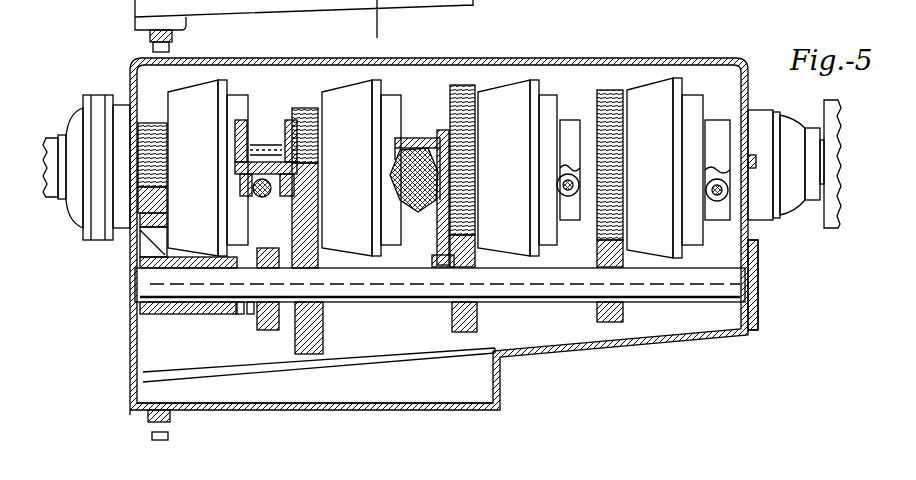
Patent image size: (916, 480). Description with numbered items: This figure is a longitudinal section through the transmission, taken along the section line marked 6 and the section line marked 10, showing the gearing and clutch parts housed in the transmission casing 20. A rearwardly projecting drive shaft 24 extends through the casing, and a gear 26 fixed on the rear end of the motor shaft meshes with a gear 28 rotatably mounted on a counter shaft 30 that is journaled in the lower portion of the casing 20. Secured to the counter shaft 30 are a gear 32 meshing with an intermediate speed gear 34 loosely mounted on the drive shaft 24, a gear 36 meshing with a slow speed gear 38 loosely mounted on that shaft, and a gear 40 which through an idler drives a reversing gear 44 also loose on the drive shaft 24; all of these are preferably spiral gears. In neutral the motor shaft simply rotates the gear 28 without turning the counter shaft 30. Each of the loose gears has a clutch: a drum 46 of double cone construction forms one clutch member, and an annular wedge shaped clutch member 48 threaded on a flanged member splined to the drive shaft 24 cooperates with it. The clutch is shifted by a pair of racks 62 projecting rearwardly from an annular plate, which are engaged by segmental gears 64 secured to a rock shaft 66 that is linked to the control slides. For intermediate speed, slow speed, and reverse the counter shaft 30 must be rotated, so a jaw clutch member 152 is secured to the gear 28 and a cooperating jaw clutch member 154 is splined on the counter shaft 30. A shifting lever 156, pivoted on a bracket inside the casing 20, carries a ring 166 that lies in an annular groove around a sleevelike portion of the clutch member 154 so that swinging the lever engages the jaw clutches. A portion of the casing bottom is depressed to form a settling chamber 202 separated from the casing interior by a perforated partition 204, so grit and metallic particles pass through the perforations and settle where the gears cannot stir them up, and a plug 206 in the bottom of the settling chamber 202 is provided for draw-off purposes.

The section line arrow 6 is at (380, 32).
The section line arrow 10 is at (400, 21).
The transmission casing 20 is at (740, 60).
The drive shaft 24 is at (283, 145).
The gear 26 is at (150, 128).
The gear 28 is at (140, 250).
The counter shaft 30 is at (402, 303).
The gear 32 is at (323, 343).
The intermediate speed gear 34 is at (303, 108).
The gear 36 is at (477, 320).
The slow speed gear 38 is at (463, 85).
The gear 40 is at (613, 323).
The reversing gear 44 is at (607, 92).
The drum 46 is at (196, 90).
The clutch member 48 is at (222, 92).
The racks 62 is at (408, 145).
The segmental gears 64 is at (445, 222).
The rock shaft 66 is at (287, 200).
The jaw clutch member 152 is at (240, 316).
The jaw clutch member 154 is at (251, 316).
The shifting lever 156 is at (322, 262).
The ring 166 is at (266, 331).
The settling chamber 202 is at (428, 385).
The perforated partition 204 is at (500, 378).
The plug 206 is at (150, 37).